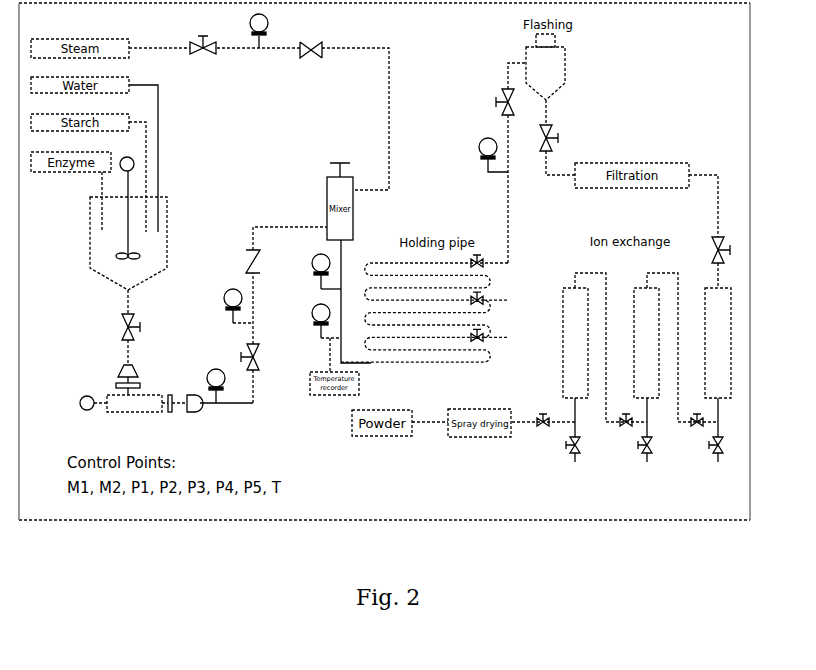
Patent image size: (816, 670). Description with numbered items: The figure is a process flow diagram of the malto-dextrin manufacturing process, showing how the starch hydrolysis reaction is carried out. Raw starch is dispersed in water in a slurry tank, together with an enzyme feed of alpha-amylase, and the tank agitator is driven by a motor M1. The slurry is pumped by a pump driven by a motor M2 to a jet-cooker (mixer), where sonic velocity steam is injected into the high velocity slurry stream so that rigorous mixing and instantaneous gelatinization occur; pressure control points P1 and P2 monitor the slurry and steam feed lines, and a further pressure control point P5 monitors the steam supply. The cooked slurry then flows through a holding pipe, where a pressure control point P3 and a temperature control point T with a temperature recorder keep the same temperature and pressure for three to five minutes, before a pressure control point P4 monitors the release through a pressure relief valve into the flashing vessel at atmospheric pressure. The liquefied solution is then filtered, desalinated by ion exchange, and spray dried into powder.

The agitator motor M1 is at (127, 164).
The pump motor M2 is at (87, 403).
The pressure gauge 1 P1 is at (216, 386).
The pressure gauge 2 P2 is at (233, 306).
The pressure gauge 3 P3 is at (321, 271).
The pressure gauge 4 P4 is at (493, 155).
The pressure gauge 5 P5 is at (259, 31).
The temperature sensor T is at (321, 321).